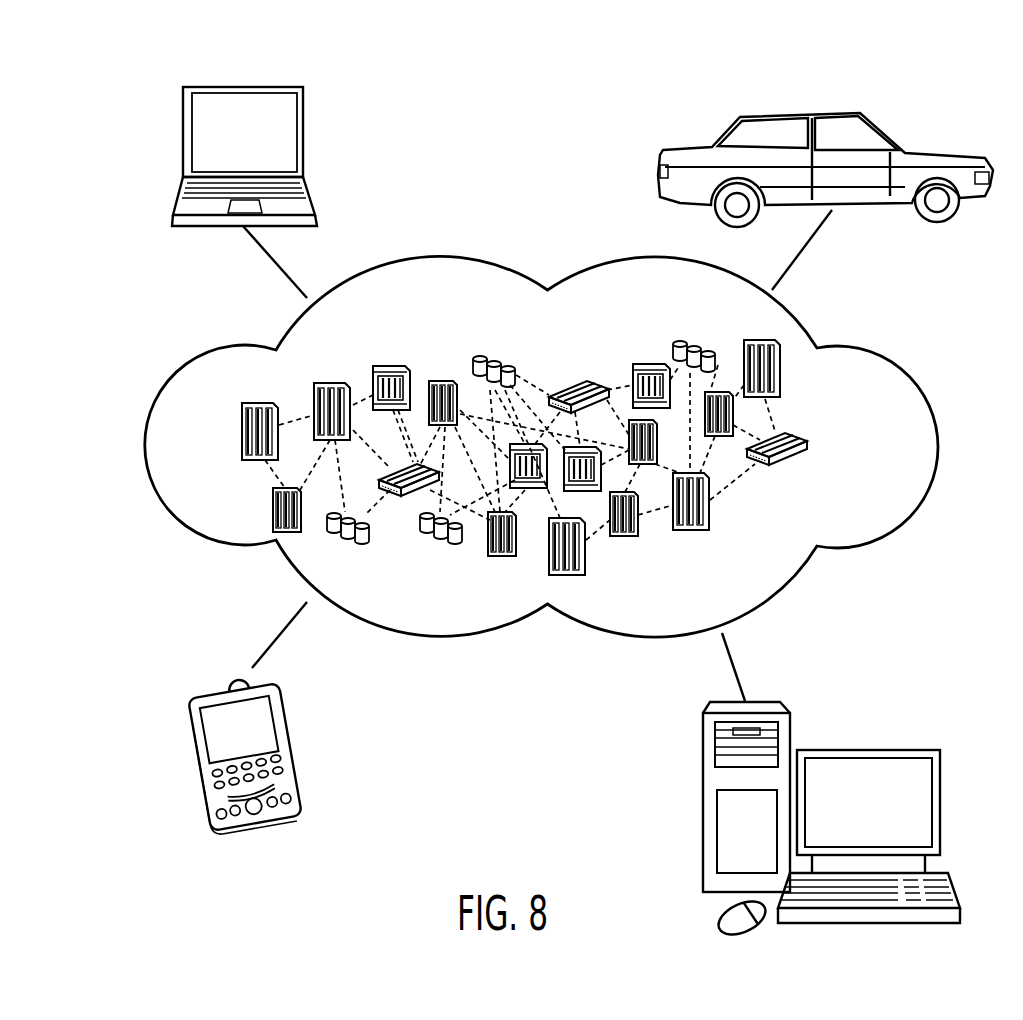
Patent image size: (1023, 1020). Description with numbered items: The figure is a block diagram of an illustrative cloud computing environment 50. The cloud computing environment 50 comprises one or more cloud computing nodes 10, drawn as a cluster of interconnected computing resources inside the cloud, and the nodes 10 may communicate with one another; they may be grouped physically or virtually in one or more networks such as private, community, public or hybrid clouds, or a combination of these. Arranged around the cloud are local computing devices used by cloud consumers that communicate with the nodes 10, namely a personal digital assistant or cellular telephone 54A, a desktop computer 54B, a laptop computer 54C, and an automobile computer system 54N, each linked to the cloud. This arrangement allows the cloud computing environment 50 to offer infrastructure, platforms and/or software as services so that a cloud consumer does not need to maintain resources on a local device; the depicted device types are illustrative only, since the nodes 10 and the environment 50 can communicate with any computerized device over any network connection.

The cloud computing node 10 is at (826, 449).
The cloud computing environment 50 is at (883, 355).
The personal digital assistant (PDA) or cellular telephone 54A is at (223, 687).
The desktop computer 54B is at (870, 750).
The laptop computer 54C is at (243, 87).
The automobile computer system 54N is at (803, 113).